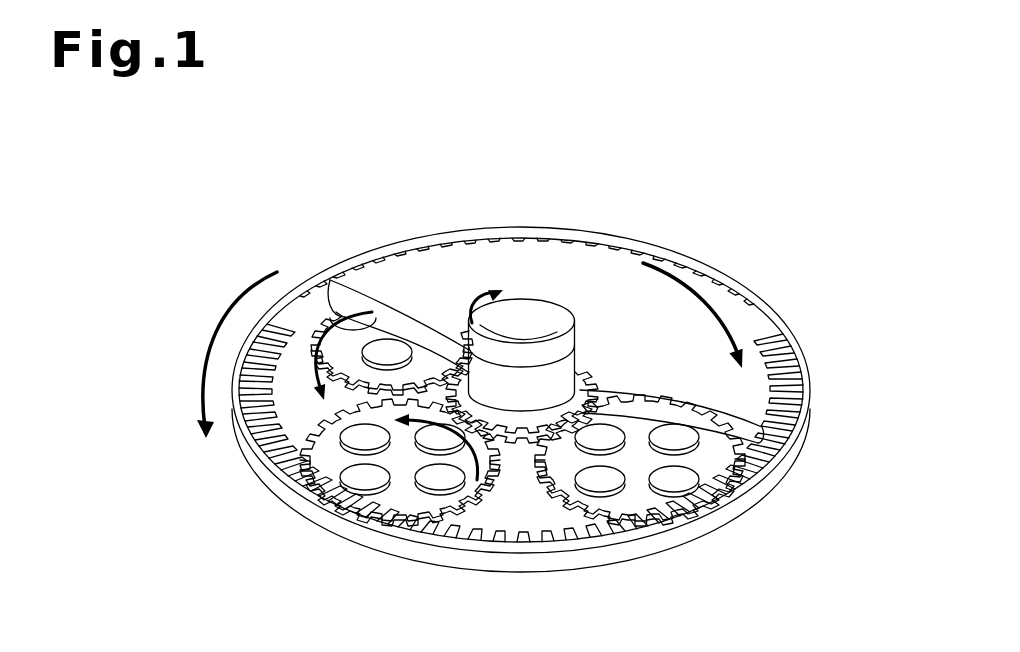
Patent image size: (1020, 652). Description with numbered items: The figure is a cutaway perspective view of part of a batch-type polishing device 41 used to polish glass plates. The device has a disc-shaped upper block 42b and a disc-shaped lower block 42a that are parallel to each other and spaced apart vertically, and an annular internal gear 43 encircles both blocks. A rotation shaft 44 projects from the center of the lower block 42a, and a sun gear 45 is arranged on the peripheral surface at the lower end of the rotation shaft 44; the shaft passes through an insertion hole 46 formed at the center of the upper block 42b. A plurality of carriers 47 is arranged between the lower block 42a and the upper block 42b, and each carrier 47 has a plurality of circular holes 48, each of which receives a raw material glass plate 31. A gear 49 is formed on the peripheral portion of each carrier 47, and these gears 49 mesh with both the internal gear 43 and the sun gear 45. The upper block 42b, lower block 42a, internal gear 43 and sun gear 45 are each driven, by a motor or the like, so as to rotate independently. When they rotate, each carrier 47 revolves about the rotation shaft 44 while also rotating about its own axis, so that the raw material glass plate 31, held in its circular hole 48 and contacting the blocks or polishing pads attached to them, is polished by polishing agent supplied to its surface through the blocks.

The raw material glass plate 31 is at (679, 432).
The polishing device 41 is at (738, 208).
The lower block 42a is at (538, 513).
The upper block 42b is at (606, 266).
The internal gear 43 is at (792, 343).
The rotation shaft 44 is at (543, 307).
The sun gear 45 is at (506, 413).
The insertion hole 46 is at (577, 360).
The carrier 47 is at (377, 380).
The circular hole 48 is at (555, 466).
The gear 49 is at (428, 378).